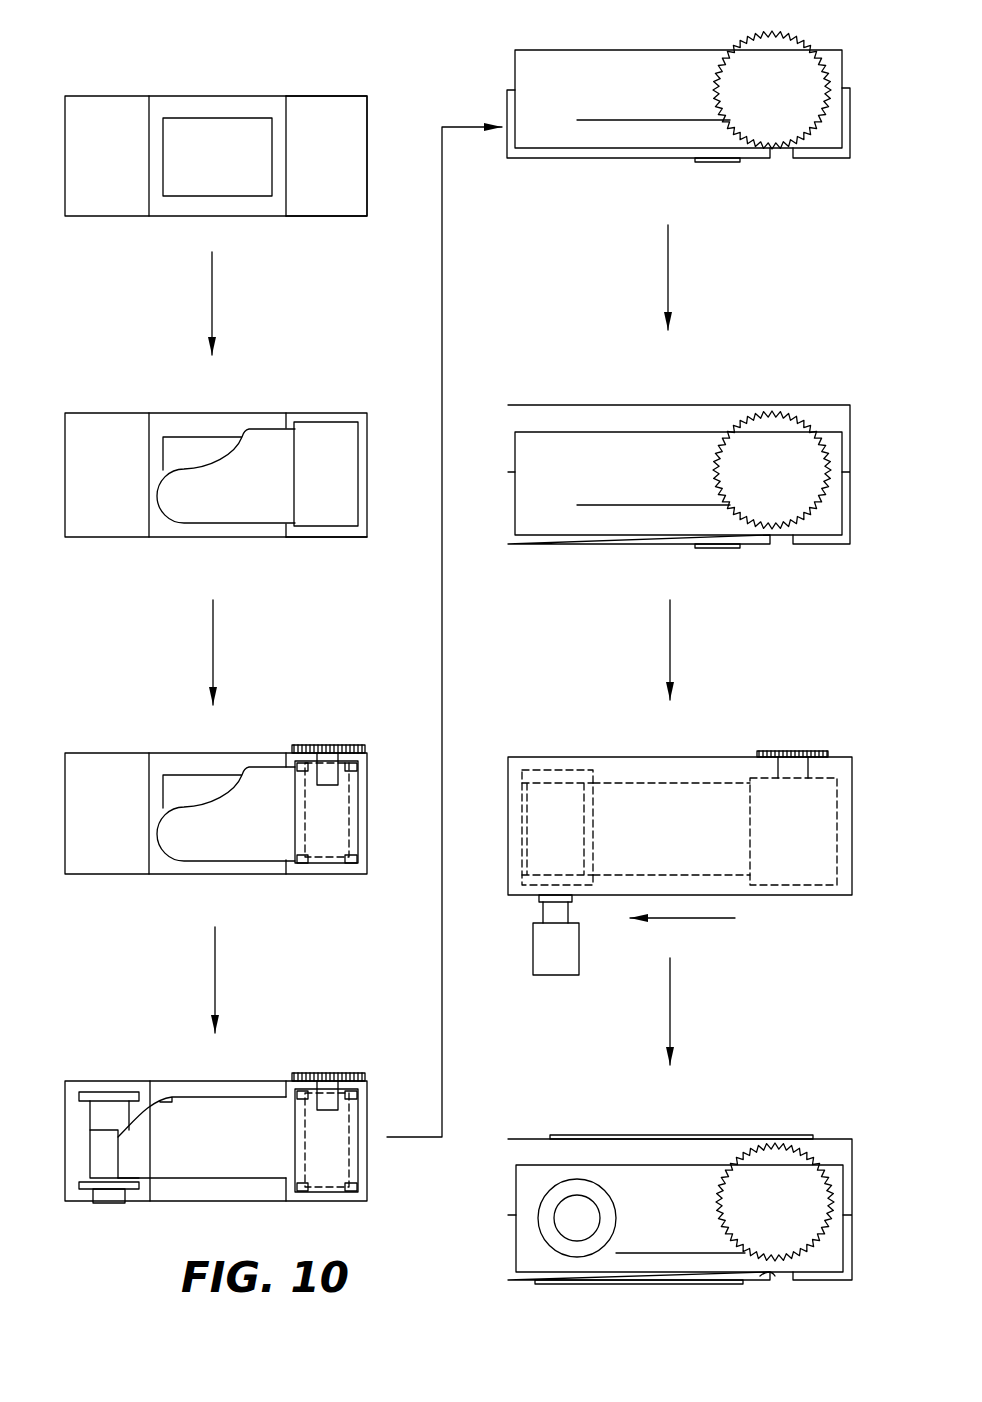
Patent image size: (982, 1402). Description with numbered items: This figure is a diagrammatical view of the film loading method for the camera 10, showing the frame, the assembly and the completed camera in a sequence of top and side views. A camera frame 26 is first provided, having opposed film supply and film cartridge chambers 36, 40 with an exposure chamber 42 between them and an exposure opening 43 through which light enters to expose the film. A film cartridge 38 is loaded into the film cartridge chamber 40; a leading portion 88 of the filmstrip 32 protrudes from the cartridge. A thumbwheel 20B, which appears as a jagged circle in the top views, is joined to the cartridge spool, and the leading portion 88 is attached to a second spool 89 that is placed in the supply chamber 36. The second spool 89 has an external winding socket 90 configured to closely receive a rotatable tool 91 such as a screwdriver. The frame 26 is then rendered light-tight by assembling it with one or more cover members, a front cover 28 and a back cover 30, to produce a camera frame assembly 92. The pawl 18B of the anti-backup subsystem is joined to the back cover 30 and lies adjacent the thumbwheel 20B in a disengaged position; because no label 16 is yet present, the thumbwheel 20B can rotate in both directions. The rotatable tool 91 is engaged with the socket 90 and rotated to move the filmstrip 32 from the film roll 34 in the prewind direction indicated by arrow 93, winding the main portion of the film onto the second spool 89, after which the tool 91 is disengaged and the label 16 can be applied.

The camera 10 is at (508, 1215).
The label 16 is at (677, 1136).
The pawl 18B is at (773, 1275).
The thumbwheel 20B is at (310, 745).
The frame 26 is at (335, 96).
The front cover 28 is at (523, 405).
The back cover 30 is at (500, 155).
The filmstrip 32 is at (645, 119).
The film roll 34 is at (525, 833).
The film supply chamber 36 is at (104, 217).
The film cartridge 38 is at (335, 435).
The film cartridge chamber 40 is at (368, 123).
The exposure chamber 42 is at (196, 96).
The exposure opening 43 is at (253, 116).
The leading portion 88 is at (272, 435).
The second spool 89 is at (100, 1088).
The external winding socket 90 is at (106, 1203).
The rotatable tool 91 is at (533, 935).
The camera frame assembly 92 is at (555, 297).
The prewind direction arrow 93 is at (699, 919).